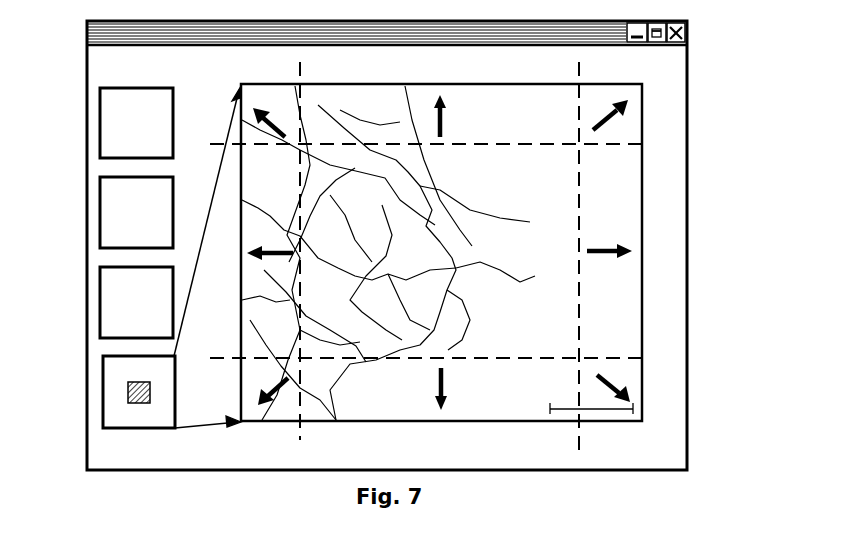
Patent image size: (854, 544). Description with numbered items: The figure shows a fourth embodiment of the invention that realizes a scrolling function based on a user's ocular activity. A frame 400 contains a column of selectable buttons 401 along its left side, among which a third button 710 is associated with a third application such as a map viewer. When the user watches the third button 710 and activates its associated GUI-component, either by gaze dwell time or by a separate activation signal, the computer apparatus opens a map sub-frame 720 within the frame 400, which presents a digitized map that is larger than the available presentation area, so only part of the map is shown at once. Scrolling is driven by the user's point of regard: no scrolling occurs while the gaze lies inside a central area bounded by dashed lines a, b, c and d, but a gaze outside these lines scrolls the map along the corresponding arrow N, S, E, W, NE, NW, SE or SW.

The frame 400 is at (776, 42).
The panel of selectable items 401 is at (80, 88).
The third button 710 is at (172, 279).
The map sub-frame 720 is at (492, 266).